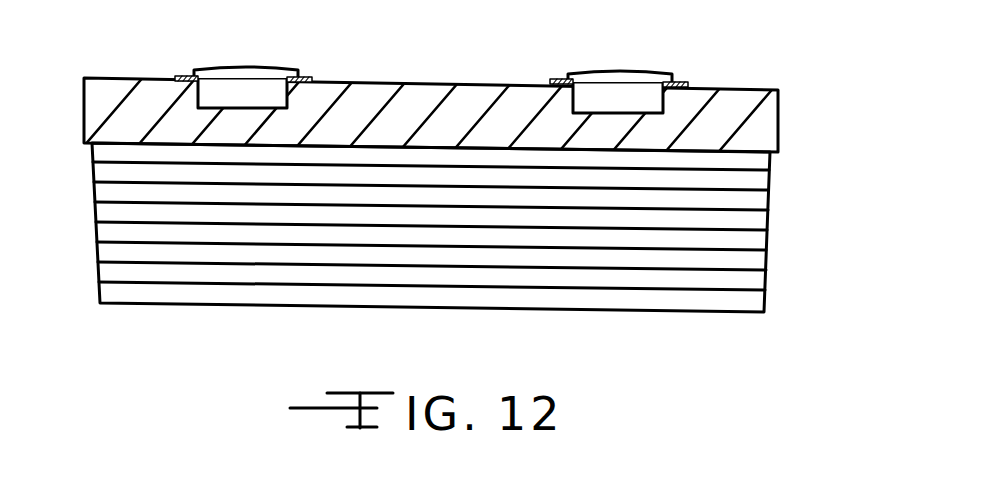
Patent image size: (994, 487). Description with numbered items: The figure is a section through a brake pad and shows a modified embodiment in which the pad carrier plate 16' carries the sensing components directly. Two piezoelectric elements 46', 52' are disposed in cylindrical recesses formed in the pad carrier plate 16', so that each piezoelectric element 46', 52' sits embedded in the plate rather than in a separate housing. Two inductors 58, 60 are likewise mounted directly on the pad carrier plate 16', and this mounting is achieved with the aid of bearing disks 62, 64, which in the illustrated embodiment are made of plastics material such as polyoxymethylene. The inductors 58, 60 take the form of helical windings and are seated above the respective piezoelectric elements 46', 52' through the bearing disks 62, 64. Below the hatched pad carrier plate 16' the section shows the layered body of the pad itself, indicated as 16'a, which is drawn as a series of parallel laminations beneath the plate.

The pad carrier plate 16' is at (459, 110).
The laminated layers of substrate 16'a is at (465, 227).
The piezoelectric element 46' is at (309, 58).
The bearing disk 64 is at (262, 68).
The inductor 58 is at (188, 77).
The piezoelectric element 52' is at (689, 67).
The bearing disk 62 is at (638, 71).
The inductor 60 is at (560, 80).